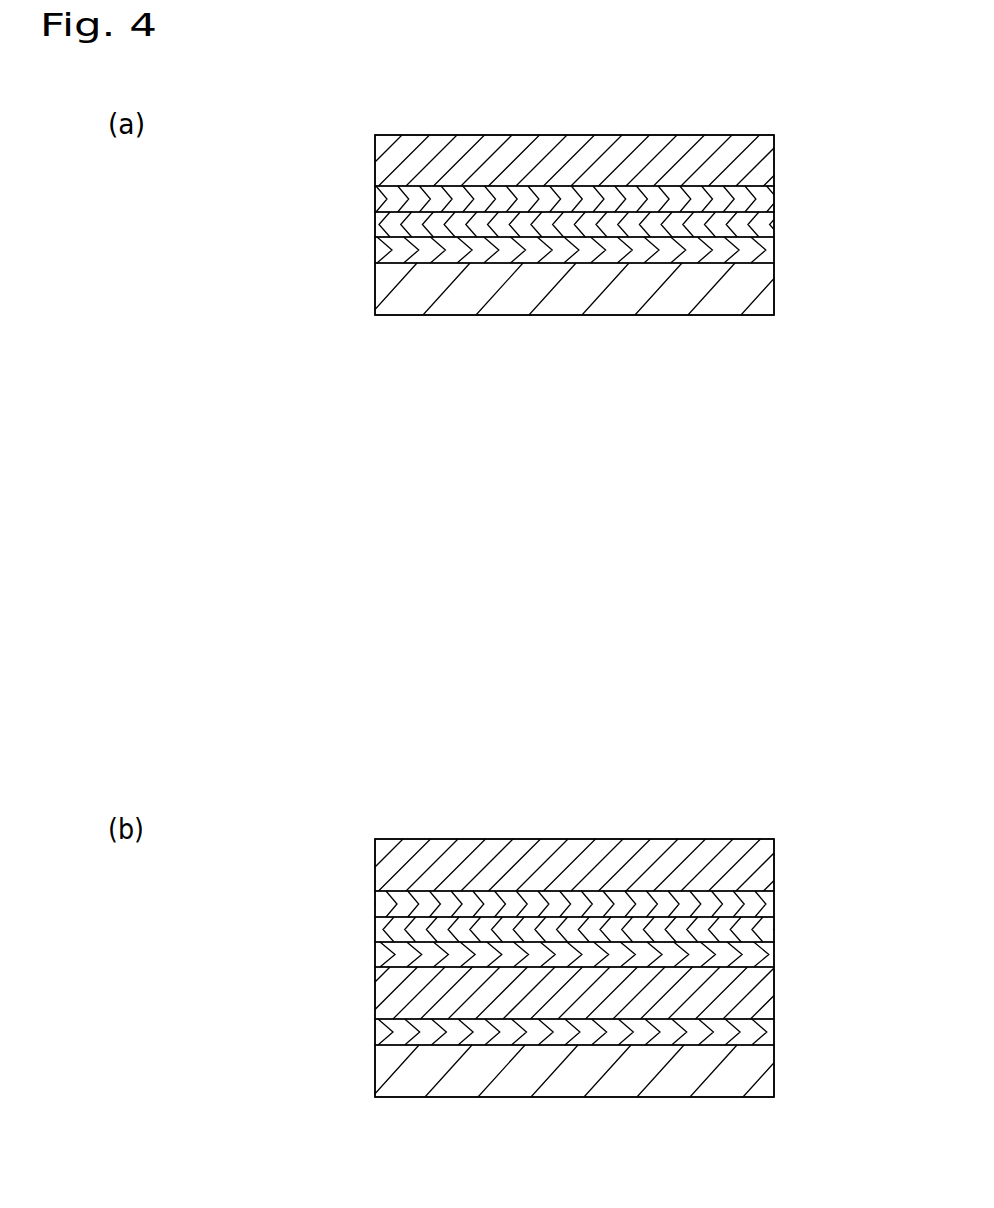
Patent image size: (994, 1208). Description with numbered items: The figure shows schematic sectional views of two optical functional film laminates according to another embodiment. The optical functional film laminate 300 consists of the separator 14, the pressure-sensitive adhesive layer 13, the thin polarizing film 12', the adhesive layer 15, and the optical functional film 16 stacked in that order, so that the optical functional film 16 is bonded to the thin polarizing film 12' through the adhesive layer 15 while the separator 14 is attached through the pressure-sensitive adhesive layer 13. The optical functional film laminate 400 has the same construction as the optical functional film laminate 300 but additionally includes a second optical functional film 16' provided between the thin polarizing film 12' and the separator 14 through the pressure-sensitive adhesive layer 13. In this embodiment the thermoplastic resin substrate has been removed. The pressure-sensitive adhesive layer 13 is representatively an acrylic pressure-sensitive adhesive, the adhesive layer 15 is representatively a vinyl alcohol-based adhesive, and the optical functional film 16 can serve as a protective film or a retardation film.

The optical functional film laminate 300 is at (772, 85).
The optical functional film laminate 400 is at (762, 760).
The optical functional film 16 is at (616, 509).
The adhesive layer 15 is at (767, 195).
The thin polarizing film 12' is at (632, 577).
The pressure-sensitive adhesive layer 13 is at (767, 250).
The separator 14 is at (767, 290).
The second optical functional film 16' is at (614, 993).